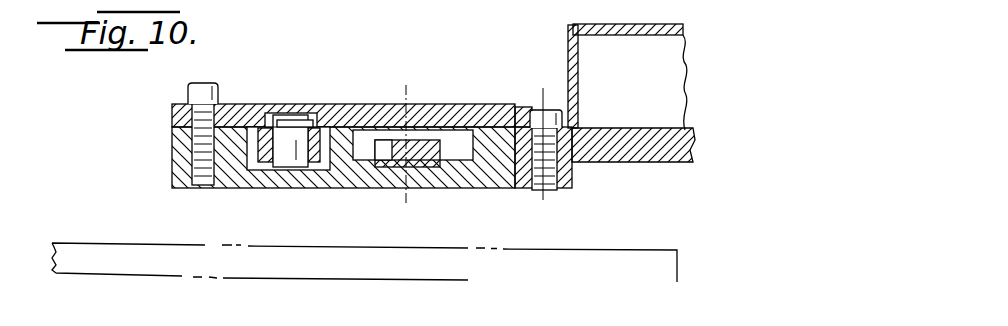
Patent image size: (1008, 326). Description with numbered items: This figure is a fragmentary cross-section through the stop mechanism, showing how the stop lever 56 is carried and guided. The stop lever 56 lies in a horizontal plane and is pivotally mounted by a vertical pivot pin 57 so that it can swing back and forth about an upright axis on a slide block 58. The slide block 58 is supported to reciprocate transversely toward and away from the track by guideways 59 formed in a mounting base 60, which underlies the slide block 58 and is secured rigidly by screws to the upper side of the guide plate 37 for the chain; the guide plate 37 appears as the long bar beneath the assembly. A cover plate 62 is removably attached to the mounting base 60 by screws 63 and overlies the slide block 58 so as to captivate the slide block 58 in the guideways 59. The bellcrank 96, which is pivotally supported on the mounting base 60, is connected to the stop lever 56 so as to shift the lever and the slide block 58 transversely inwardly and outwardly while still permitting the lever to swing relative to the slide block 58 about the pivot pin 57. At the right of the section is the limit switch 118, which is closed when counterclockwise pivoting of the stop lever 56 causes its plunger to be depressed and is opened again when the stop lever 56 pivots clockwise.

The guide plate 37 is at (103, 243).
The stop lever 56 is at (272, 165).
The pivot pin 57 is at (313, 167).
The slide block 58 is at (285, 118).
The guideways 59 is at (256, 132).
The mounting base 60 is at (518, 190).
The cover plate 62 is at (175, 112).
The screws 63 is at (188, 94).
The bellcrank 96 is at (445, 147).
The limit switch 118 is at (591, 50).